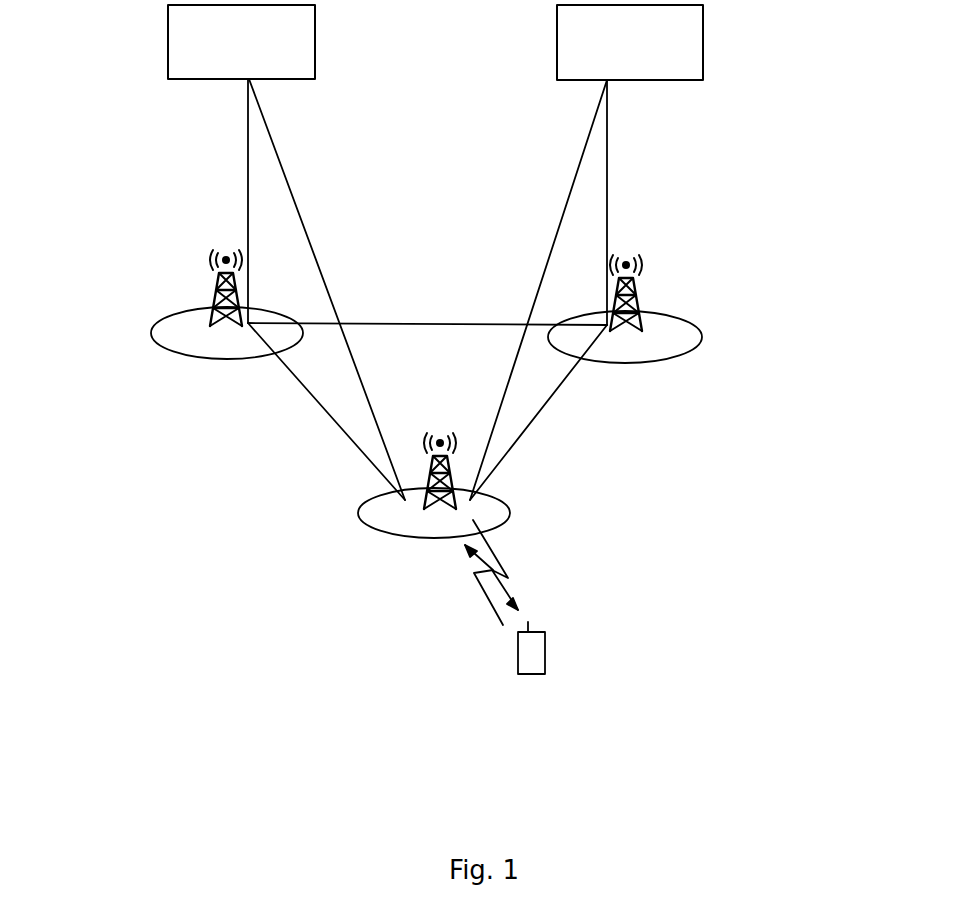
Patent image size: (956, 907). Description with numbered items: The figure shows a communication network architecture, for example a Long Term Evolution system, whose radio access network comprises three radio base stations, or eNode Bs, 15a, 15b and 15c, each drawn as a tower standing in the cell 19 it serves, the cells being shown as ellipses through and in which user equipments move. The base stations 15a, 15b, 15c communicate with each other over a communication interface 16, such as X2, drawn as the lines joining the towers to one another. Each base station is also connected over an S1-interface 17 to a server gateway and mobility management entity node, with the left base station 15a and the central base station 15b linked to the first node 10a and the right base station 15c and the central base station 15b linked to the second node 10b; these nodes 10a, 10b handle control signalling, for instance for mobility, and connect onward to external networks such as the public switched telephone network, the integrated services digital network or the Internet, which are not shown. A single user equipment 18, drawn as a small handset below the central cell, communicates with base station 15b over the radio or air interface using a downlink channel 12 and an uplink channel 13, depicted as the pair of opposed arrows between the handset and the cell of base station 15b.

The server gateway and mobility management entity node 10a is at (232, 57).
The server gateway and mobility management entity node 10b is at (614, 57).
The downlink channel 12 is at (493, 552).
The uplink channel 13 is at (485, 608).
The radio base station 15a is at (217, 283).
The radio base station 15b is at (428, 501).
The radio base station 15c is at (635, 281).
The communication interface 16 is at (403, 323).
The S1-interface 17 is at (248, 175).
The user equipment 18 is at (545, 650).
The cell 19 is at (152, 322).